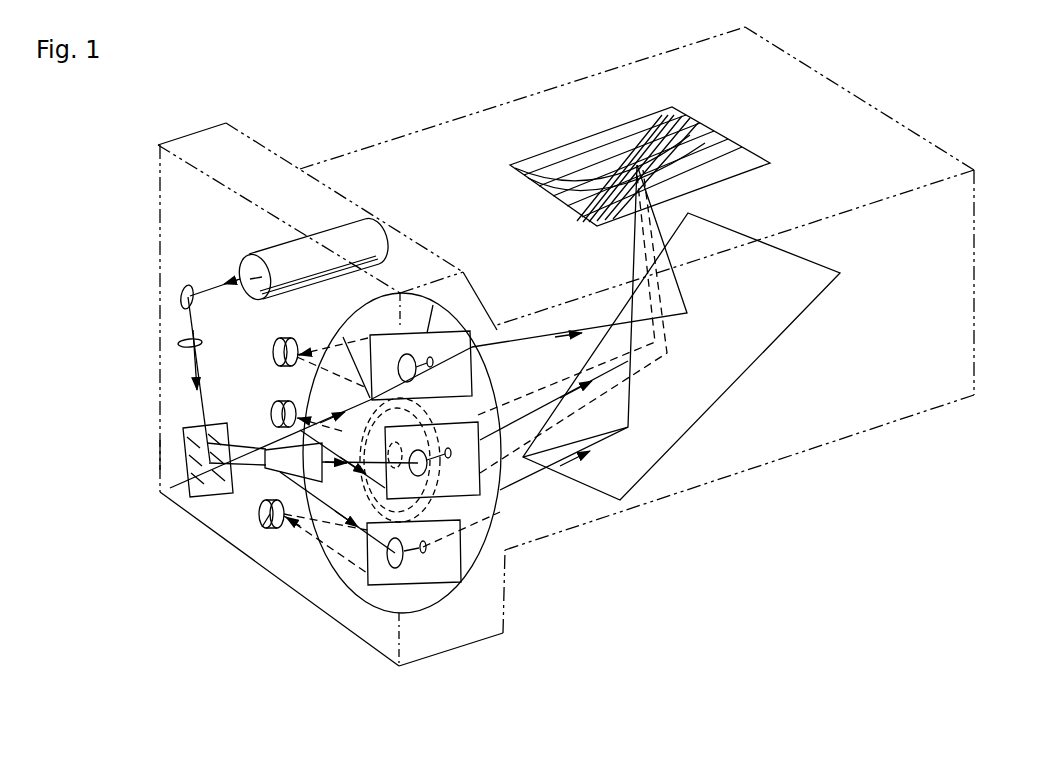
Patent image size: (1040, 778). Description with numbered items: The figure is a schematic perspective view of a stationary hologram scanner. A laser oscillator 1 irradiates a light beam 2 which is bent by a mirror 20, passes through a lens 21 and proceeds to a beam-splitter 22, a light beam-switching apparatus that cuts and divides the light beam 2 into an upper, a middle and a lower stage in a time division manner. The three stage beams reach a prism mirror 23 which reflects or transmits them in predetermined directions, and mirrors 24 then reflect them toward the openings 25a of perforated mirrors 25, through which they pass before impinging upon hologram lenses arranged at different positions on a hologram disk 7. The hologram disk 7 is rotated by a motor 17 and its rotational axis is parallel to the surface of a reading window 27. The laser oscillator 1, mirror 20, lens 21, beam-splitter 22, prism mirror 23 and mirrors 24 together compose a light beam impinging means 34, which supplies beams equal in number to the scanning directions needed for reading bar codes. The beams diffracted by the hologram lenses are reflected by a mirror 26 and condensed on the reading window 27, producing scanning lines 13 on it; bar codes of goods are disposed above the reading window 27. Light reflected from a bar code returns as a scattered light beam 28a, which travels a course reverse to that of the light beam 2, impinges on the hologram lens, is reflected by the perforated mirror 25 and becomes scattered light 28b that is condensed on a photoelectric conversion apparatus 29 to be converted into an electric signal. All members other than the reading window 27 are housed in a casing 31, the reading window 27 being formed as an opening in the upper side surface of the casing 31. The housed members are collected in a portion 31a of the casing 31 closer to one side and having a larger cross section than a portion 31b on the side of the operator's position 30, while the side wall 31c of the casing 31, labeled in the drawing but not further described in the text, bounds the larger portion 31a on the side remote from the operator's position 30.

The laser oscillator 1 is at (263, 253).
The light beam 2 is at (217, 285).
The hologram disk 7 is at (438, 605).
The scanning lines 13 is at (690, 112).
The motor 17 is at (510, 437).
The mirror 20 is at (182, 303).
The lens 21 is at (178, 345).
The beam-splitter 22 is at (188, 478).
The prism mirror 23 is at (285, 477).
The mirrors 24 is at (382, 598).
The perforated mirrors 25 is at (392, 580).
The openings 25a is at (427, 557).
The mirror 26 is at (697, 400).
The reading window 27 is at (615, 130).
The scattered light beam 28a is at (587, 407).
The scattered light 28b is at (320, 430).
The photoelectric conversion apparatus 29 is at (263, 528).
The operator's position 30 is at (596, 346).
The casing 31 is at (960, 300).
The portion of casing 31a is at (467, 607).
The portion of casing 31b is at (903, 425).
The left side wall of housing 31c is at (192, 148).
The light beam impinging means 34 is at (172, 455).